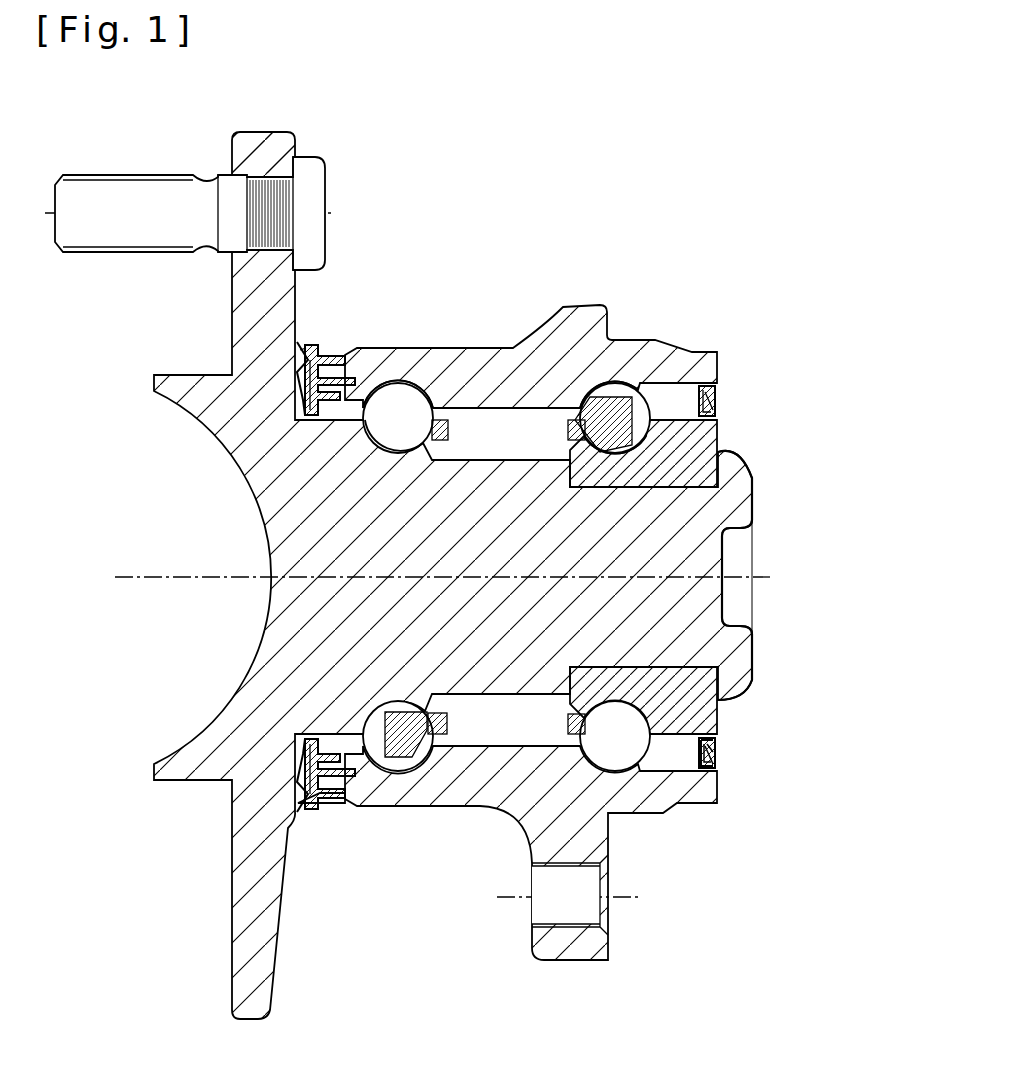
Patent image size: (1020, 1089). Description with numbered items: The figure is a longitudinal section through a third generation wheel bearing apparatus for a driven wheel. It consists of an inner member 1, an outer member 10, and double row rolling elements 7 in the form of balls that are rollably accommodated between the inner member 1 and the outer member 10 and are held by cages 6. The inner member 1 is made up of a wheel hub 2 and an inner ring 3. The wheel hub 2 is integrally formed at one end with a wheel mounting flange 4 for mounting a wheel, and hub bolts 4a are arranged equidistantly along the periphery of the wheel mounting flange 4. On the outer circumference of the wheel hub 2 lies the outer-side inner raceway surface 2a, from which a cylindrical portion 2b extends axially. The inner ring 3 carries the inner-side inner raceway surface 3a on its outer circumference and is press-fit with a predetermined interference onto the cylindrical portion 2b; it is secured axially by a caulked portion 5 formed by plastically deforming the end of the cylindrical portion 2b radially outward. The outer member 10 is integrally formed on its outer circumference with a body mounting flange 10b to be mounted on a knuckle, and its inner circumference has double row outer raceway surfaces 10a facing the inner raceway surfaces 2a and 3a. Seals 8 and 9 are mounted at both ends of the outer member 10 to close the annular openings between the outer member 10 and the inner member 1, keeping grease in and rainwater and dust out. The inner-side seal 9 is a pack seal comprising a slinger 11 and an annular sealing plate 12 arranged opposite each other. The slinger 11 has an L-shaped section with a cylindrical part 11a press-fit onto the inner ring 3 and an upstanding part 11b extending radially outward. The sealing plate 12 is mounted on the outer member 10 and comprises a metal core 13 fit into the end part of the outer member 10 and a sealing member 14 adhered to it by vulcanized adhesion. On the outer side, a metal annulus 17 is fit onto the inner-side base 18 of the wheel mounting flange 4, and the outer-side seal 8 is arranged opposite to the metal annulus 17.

The inner member 1 is at (238, 519).
The wheel hub 2 is at (212, 424).
The inner raceway surface 2a is at (388, 430).
The cylindrical portion 2b is at (636, 470).
The inner ring 3 is at (703, 433).
The inner raceway surface 3a is at (617, 440).
The wheel mounting flange 4 is at (262, 148).
The hub bolt 4a is at (152, 190).
The caulked portion 5 is at (735, 461).
The cage 6 is at (420, 718).
The rolling element 7 is at (408, 760).
The outer-side seal 8 is at (338, 802).
The inner-side seal 9 is at (843, 717).
The outer member 10 is at (516, 350).
The outer raceway surface 10a is at (408, 398).
The body mounting flange 10b is at (575, 963).
The slinger 11 is at (788, 702).
The cylindrical part 11a is at (716, 737).
The upstanding part 11b is at (718, 749).
The sealing plate 12 is at (788, 775).
The metal core 13 is at (716, 778).
The sealing member 14 is at (718, 762).
The metal annulus 17 is at (320, 757).
The inner-side base 18 is at (300, 388).